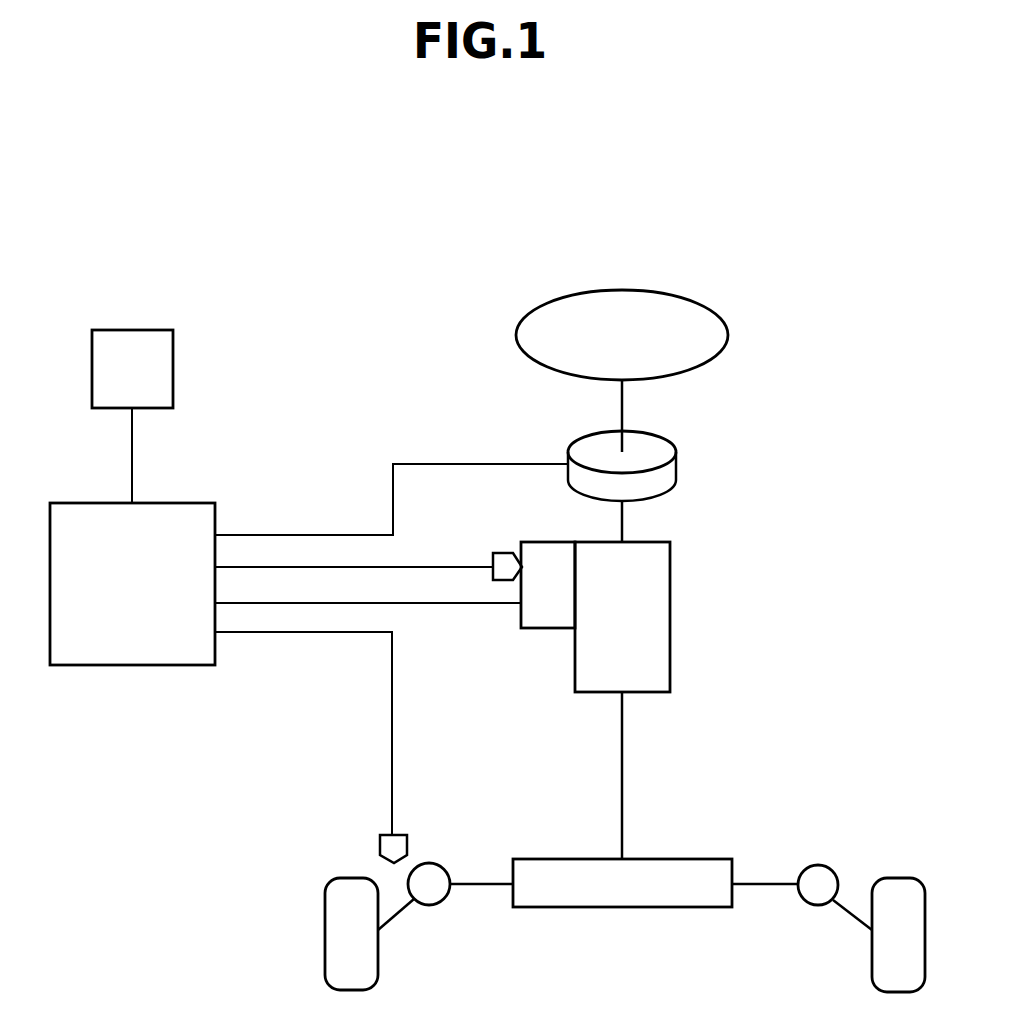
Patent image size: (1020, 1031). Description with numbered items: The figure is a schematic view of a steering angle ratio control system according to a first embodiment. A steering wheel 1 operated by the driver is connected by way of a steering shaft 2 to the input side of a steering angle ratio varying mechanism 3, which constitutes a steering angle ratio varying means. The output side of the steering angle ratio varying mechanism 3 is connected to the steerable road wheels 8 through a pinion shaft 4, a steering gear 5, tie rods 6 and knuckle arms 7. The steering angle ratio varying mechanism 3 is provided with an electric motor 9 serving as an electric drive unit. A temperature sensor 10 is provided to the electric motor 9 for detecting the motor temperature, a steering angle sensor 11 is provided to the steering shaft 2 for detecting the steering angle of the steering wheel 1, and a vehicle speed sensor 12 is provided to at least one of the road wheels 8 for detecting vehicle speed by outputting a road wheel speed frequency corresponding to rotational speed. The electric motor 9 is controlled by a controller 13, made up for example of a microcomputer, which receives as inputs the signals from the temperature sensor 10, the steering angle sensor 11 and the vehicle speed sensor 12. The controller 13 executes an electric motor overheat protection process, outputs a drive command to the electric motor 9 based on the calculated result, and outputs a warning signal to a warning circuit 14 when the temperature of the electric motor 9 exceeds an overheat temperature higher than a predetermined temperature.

The steering wheel 1 is at (715, 333).
The steering shaft 2 is at (623, 403).
The steering angle ratio varying mechanism 3 is at (657, 615).
The pinion shaft 4 is at (623, 752).
The steering gear 5 is at (678, 866).
The tie rods 6 is at (483, 880).
The knuckle arms 7 is at (398, 915).
The steerable road wheels 8 is at (345, 890).
The electric motor 9 is at (540, 618).
The temperature sensor 10 is at (501, 556).
The steering angle sensor 11 is at (665, 452).
The vehicle speed sensor 12 is at (395, 843).
The controller 13 is at (120, 653).
The warning circuit 14 is at (132, 338).